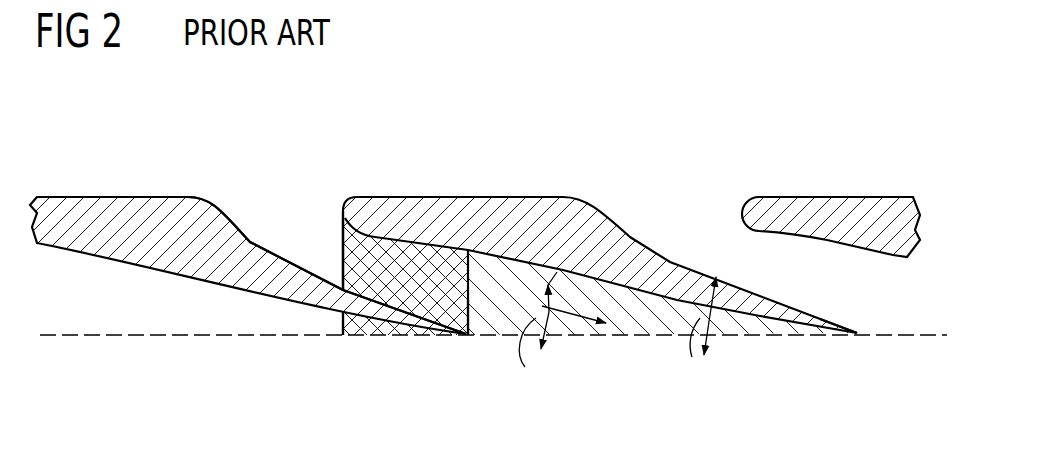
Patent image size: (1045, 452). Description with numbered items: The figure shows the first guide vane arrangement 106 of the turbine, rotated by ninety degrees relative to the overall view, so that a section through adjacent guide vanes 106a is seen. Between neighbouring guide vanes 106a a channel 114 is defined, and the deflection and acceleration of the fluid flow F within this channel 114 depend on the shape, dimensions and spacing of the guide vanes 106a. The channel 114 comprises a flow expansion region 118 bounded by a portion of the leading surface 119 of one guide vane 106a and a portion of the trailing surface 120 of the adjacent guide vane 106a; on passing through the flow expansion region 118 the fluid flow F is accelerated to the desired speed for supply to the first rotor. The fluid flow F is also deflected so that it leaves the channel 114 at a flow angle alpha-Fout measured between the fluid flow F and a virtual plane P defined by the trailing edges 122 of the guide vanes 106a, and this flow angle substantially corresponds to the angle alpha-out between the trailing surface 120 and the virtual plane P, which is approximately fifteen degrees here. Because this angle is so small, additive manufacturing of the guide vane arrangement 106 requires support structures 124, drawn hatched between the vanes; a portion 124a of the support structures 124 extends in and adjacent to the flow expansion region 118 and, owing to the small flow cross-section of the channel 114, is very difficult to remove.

The first guide vane arrangement 106 is at (750, 110).
The guide vane 106a is at (118, 205).
The channel 114 is at (303, 227).
The flow expansion region 118 is at (430, 300).
The leading surface 119 is at (250, 238).
The trailing surface 120 is at (525, 262).
The trailing edge 122 is at (466, 337).
The support structures 124 is at (590, 302).
The portion of the support structures 124a is at (400, 257).
The fluid flow F is at (580, 320).
The virtual plane P is at (900, 335).